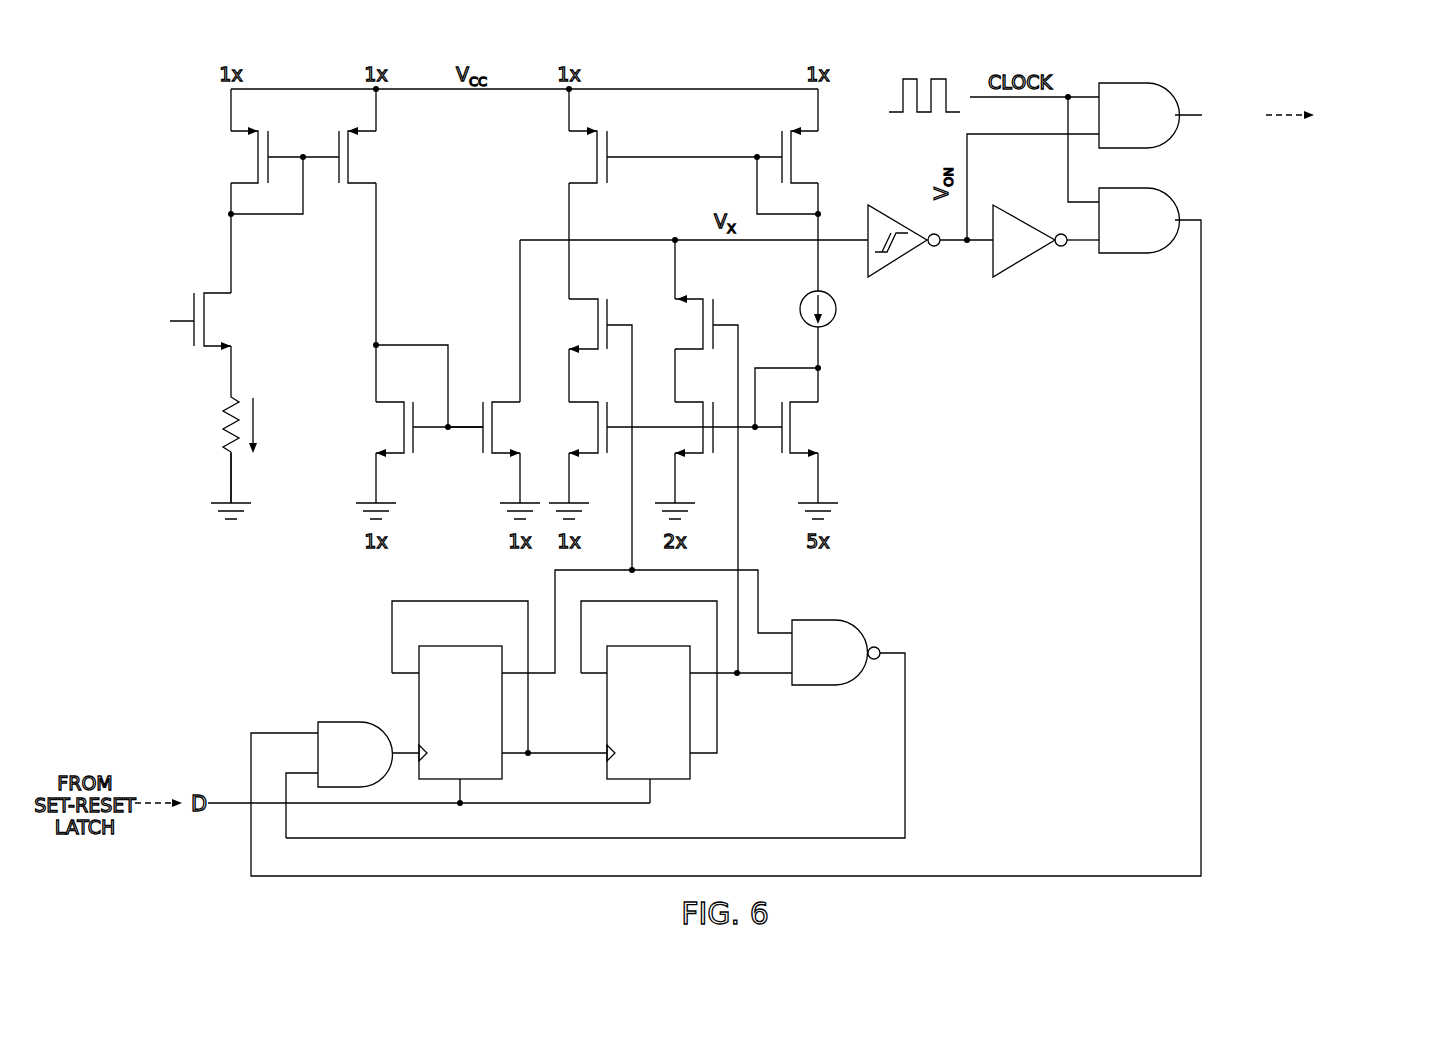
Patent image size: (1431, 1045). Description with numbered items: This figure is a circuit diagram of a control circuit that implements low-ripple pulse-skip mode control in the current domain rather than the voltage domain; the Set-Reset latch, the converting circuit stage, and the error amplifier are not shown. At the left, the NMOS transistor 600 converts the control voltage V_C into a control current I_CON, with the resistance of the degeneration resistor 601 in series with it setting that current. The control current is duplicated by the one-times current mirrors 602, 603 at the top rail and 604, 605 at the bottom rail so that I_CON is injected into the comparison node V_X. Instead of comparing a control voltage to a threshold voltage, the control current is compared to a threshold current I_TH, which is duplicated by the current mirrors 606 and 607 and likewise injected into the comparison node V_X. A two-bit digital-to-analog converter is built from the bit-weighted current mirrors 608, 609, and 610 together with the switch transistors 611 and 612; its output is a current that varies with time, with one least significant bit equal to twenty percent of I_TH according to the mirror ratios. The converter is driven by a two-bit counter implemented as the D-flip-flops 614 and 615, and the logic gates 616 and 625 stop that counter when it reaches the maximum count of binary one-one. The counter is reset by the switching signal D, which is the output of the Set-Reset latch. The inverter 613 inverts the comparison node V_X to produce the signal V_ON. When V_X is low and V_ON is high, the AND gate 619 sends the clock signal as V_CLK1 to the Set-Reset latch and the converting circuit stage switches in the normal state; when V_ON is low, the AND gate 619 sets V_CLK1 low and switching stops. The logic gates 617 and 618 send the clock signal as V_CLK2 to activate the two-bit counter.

The NMOS transistor 600 is at (216, 294).
The degeneration resistor 601 is at (226, 423).
The current mirror 602 is at (246, 186).
The current mirror 603 is at (362, 186).
The current mirror 604 is at (388, 400).
The current mirror 605 is at (504, 400).
The current mirror 606 is at (582, 186).
The current mirror 607 is at (803, 132).
The bit-weighted current mirror 608 is at (808, 400).
The bit-weighted current mirror 609 is at (692, 400).
The bit-weighted current mirror 610 is at (582, 400).
The switch transistor 611 is at (696, 298).
The switch transistor 612 is at (586, 298).
The inverter 613 is at (898, 258).
The D-flip-flop 614 is at (462, 646).
The D-flip-flop 615 is at (650, 646).
The logic gate 616 is at (340, 722).
The logic gate 617 is at (1023, 258).
The logic gate 618 is at (1122, 188).
The AND gate 619 is at (1122, 83).
The logic gate 625 is at (815, 620).